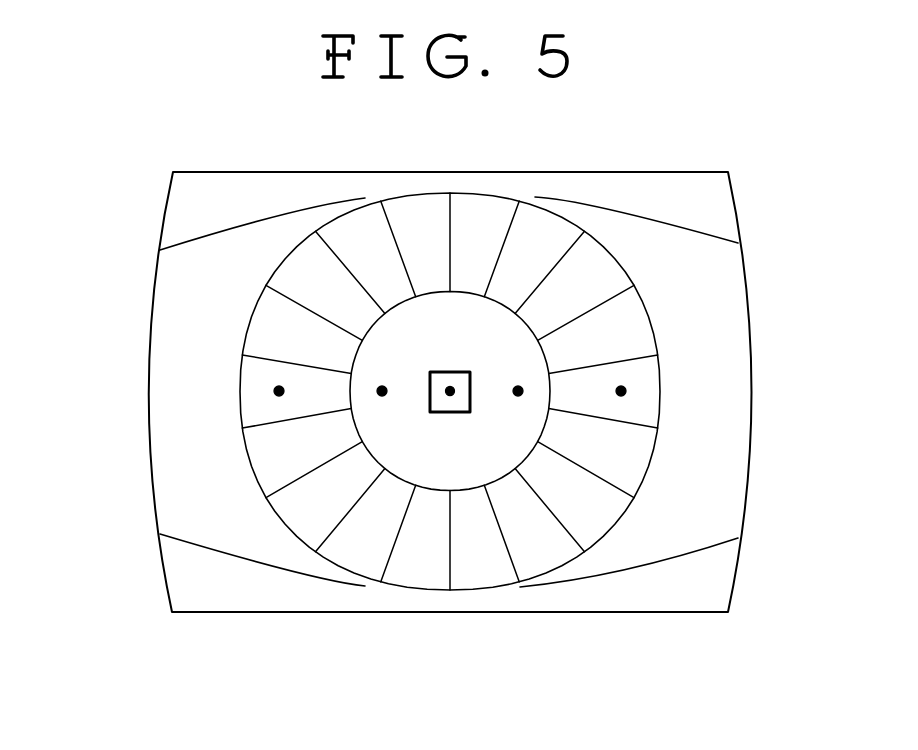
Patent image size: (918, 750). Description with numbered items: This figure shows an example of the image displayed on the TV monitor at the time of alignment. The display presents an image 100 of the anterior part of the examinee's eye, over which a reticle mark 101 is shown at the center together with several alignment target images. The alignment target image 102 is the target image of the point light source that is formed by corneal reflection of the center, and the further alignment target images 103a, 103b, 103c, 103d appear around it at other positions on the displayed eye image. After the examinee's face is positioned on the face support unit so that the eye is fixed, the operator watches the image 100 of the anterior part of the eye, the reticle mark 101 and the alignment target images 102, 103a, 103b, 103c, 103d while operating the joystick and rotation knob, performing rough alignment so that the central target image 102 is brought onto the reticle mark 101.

The image of the anterior part of the eye 100 is at (668, 268).
The reticle mark 101 is at (470, 377).
The alignment target image 102 is at (450, 391).
The alignment target image 103a is at (621, 391).
The alignment target image 103b is at (279, 391).
The alignment target image 103c is at (518, 391).
The alignment target image 103d is at (382, 391).